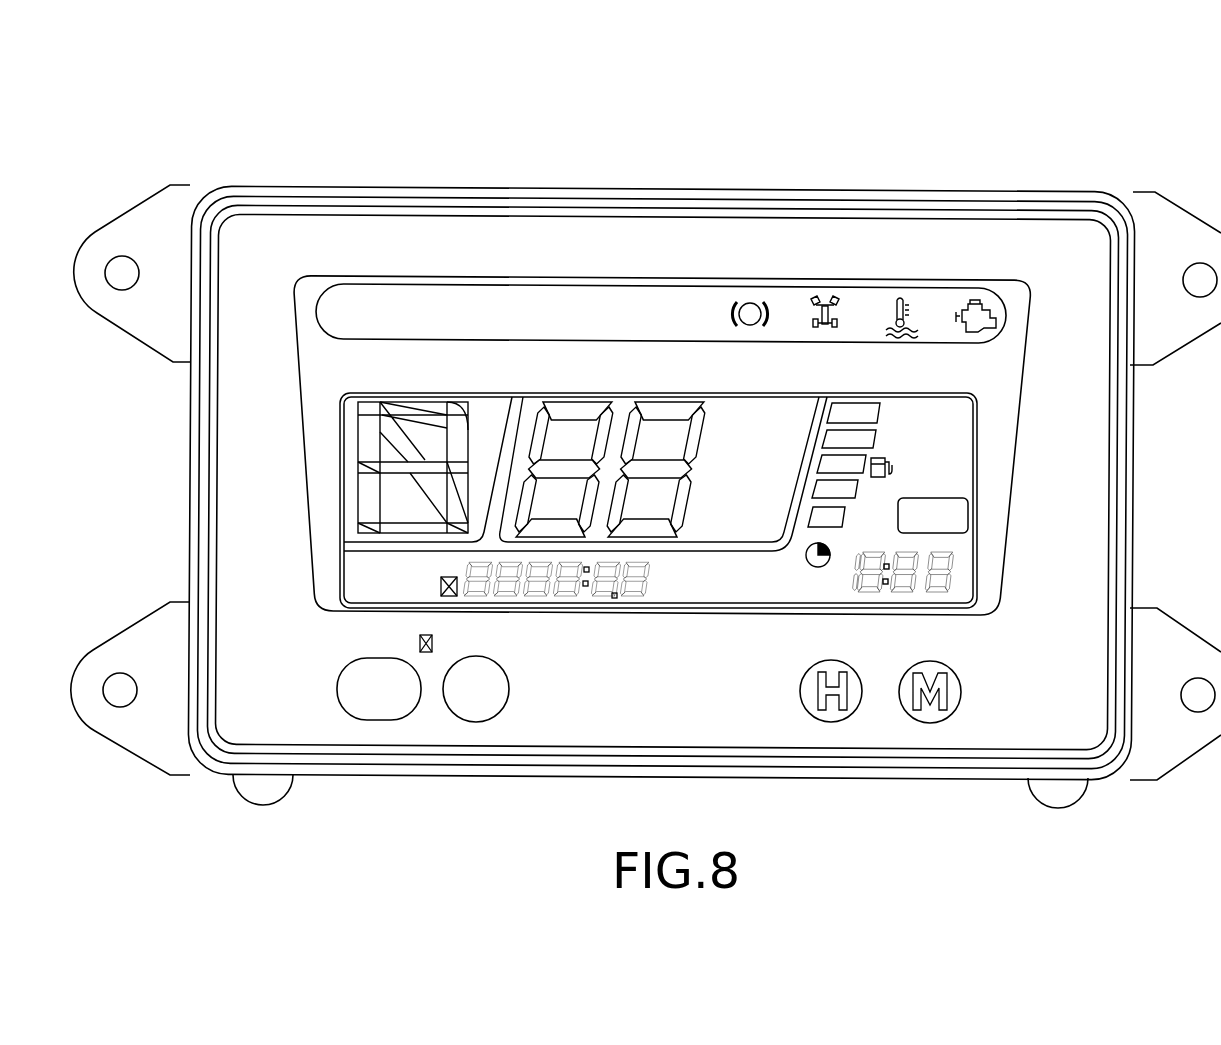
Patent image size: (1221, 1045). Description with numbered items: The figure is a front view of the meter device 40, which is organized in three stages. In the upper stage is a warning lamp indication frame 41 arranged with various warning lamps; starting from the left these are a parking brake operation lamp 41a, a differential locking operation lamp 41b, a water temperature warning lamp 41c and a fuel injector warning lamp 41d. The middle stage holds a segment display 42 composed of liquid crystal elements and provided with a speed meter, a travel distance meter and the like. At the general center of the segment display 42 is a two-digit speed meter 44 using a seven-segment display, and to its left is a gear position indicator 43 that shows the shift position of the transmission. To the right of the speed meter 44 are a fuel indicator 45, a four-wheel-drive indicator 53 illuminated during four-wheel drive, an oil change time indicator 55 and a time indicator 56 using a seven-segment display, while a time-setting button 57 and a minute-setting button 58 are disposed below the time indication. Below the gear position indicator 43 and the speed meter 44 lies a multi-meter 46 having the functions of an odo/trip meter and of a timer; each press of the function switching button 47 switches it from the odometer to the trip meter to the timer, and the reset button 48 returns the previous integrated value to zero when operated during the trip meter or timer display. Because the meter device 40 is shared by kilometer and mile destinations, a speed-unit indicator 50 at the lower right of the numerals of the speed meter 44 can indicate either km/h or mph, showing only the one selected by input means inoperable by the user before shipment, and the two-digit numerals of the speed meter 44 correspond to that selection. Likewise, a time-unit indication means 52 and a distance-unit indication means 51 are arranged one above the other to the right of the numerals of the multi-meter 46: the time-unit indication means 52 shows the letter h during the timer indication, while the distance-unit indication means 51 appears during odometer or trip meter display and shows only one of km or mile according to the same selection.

The meter device 40 is at (454, 160).
The warning lamp indication frame 41 is at (870, 272).
The parking brake operation lamp 41a is at (746, 300).
The differential locking operation lamp 41b is at (826, 300).
The water temperature warning lamp 41c is at (900, 298).
The fuel injector warning lamp 41d is at (990, 300).
The segment display 42 is at (988, 456).
The gear position indicator 43 is at (337, 433).
The speed meter 44 is at (628, 394).
The fuel indicator 45 is at (857, 403).
The multi-meter 46 is at (337, 573).
The function switching button 47 is at (382, 698).
The reset button 48 is at (477, 700).
The speed-unit indicator 50 is at (772, 548).
The distance-unit indication means 51 is at (686, 612).
The time-unit indication means 52 is at (675, 574).
The 4-WD indicator 53 is at (960, 430).
The oil change time indicator 55 is at (967, 516).
The time indicator 56 is at (963, 574).
The time-setting button 57 is at (830, 716).
The minute-setting button 58 is at (930, 716).